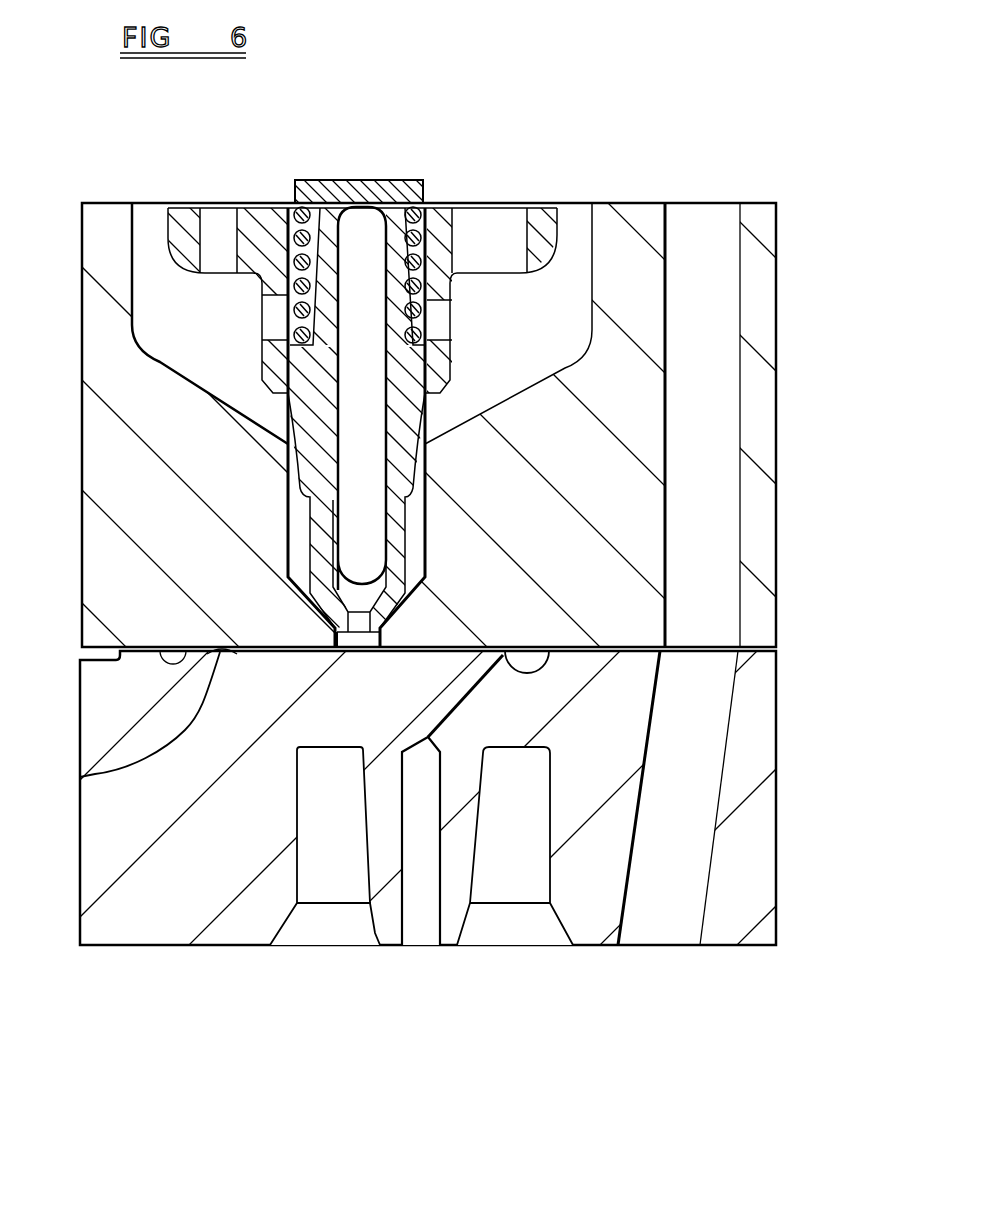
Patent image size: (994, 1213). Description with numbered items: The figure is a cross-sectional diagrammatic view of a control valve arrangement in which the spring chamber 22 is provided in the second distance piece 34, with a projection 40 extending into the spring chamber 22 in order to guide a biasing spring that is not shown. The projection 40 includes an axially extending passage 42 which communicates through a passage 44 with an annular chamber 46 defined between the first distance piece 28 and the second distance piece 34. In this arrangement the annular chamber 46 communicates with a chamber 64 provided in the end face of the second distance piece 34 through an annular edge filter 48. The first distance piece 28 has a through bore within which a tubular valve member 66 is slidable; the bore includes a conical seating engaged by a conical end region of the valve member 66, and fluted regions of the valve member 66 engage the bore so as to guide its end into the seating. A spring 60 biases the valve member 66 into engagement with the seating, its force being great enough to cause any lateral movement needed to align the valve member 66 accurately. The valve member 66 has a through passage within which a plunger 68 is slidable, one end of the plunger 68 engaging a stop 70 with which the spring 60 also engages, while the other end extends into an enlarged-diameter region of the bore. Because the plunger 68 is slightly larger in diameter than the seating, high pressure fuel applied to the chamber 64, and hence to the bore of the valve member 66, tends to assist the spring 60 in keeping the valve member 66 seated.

The spring chamber 22 is at (513, 927).
The first distance piece 28 is at (765, 455).
The second distance piece 34 is at (758, 768).
The projection 40 is at (450, 920).
The axially extending passage 42 is at (415, 925).
The passage 44 is at (487, 698).
The annular chamber 46 is at (540, 657).
The annular edge filter 48 is at (503, 645).
The spring 60 is at (377, 262).
The chamber 64 is at (82, 776).
The tubular valve member 66 is at (407, 423).
The plunger 68 is at (410, 262).
The stop 70 is at (407, 187).